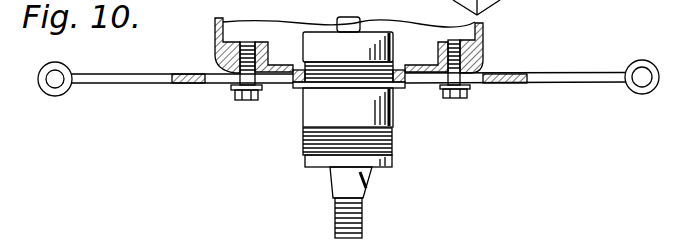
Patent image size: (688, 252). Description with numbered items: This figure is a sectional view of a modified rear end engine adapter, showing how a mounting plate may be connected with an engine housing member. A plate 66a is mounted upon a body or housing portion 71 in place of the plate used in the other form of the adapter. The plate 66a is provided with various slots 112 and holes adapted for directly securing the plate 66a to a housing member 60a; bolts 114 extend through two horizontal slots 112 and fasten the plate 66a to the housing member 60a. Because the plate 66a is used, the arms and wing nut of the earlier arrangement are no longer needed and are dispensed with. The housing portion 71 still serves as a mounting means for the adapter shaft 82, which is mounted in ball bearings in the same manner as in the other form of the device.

The housing member 60a is at (485, 40).
The plate 66a is at (573, 83).
The body or housing portion 71 is at (393, 114).
The adapter shaft 82 is at (367, 187).
The slots 112 is at (217, 83).
The bolts 114 is at (246, 101).